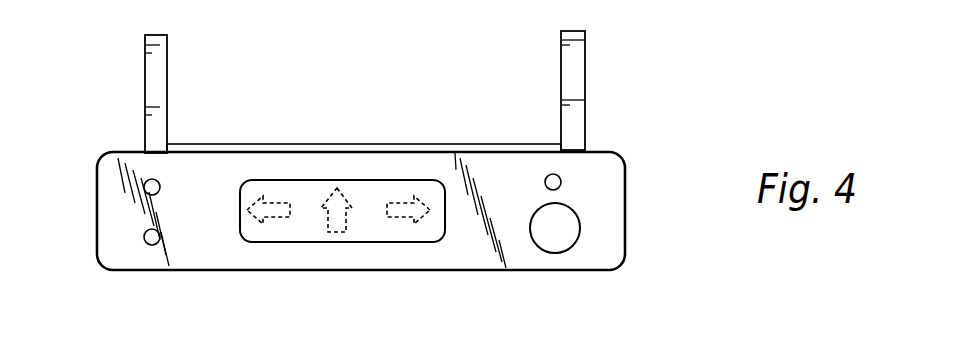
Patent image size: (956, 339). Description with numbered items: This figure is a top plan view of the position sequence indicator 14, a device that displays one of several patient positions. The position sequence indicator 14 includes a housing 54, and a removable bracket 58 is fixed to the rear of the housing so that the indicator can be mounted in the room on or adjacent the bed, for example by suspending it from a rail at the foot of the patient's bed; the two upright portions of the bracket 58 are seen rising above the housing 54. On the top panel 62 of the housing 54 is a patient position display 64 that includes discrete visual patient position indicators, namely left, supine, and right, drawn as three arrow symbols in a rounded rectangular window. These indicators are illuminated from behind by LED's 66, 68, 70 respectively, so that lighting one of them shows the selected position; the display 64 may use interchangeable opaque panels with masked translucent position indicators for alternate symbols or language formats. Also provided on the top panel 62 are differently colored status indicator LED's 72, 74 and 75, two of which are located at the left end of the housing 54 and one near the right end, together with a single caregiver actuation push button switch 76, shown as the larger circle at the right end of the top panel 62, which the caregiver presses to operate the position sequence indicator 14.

The position sequence indicator 14 is at (615, 216).
The housing 54 is at (127, 275).
The removable bracket 58 is at (160, 73).
The top panel 62 is at (612, 182).
The patient position display 64 is at (416, 180).
The LED 66 is at (262, 196).
The LED 68 is at (333, 236).
The LED 70 is at (422, 250).
The status indicator LED 72 is at (147, 180).
The status indicator LED 74 is at (148, 230).
The status indicator LED 75 is at (561, 182).
The caregiver actuation push button switch 76 is at (568, 245).